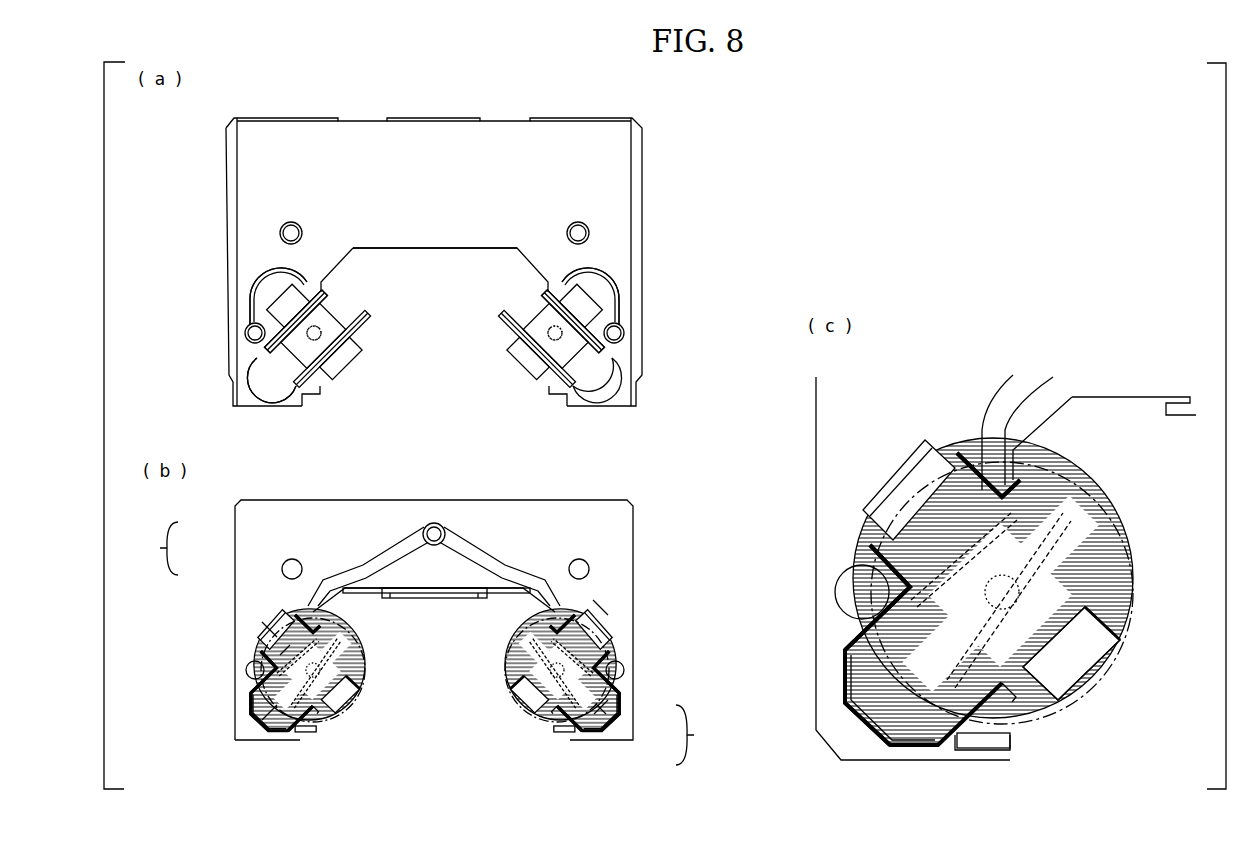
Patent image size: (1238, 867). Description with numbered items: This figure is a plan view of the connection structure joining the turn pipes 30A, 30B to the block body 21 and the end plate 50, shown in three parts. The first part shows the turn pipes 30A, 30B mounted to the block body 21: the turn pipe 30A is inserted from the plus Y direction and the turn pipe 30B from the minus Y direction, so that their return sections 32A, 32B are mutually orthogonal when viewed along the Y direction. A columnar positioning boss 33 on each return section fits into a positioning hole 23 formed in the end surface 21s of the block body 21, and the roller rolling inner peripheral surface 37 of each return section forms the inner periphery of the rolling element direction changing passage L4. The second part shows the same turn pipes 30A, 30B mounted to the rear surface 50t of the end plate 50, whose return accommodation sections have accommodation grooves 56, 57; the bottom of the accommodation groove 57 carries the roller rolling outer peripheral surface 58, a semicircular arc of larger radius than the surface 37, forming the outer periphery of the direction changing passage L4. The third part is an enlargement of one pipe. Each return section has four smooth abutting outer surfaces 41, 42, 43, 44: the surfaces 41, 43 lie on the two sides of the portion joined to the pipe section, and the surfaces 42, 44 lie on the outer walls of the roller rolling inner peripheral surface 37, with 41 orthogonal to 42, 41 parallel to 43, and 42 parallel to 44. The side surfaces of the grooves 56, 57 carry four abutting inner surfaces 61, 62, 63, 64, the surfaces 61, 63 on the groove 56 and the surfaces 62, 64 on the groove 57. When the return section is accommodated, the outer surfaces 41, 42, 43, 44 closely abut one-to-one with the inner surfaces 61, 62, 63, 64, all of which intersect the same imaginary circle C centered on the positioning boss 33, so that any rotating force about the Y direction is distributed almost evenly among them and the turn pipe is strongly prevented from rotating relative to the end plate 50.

The block body 21 is at (404, 112).
The end surface of the block body 21s is at (421, 236).
The positioning hole 23 is at (698, 510).
The positioning boss 33 is at (320, 330).
The return section of turn pipe 30A 32A is at (590, 388).
The return section of turn pipe 30B 32B is at (265, 292).
The roller rolling inner peripheral surface 37 is at (275, 360).
The turn pipe 30A is at (538, 345).
The turn pipe 30B is at (340, 360).
The end plate 50 is at (420, 490).
The rear surface of the end plate 50t is at (380, 550).
The abutting outer surface 44 is at (738, 574).
The abutting inner surface 64 is at (307, 617).
The abutting outer surface 43 is at (692, 670).
The abutting inner surface 63 is at (313, 722).
The abutting outer surface 41 is at (627, 676).
The abutting inner surface 61 is at (262, 690).
The abutting outer surface 42 is at (521, 597).
The abutting inner surface 62 is at (262, 658).
The accommodation groove 56 is at (262, 720).
The accommodation groove 57 is at (262, 622).
The roller rolling outer peripheral surface 58 is at (280, 655).
The rolling element direction changing passage L4 is at (426, 643).
The imaginary circle C is at (345, 635).